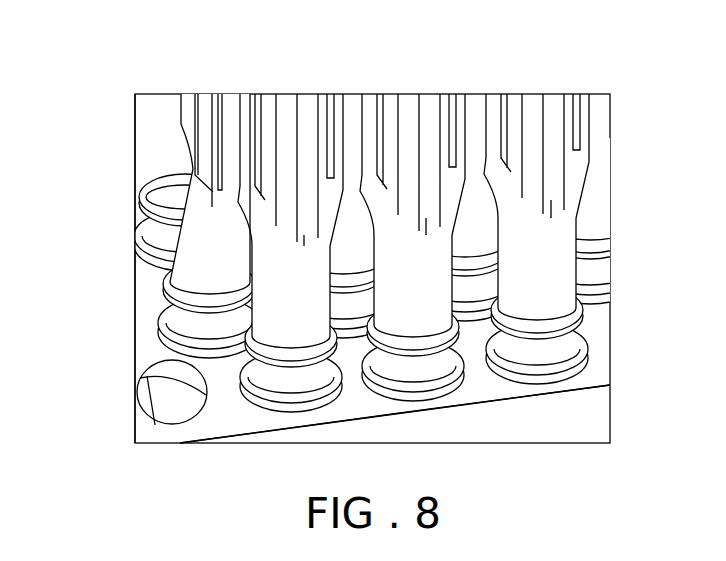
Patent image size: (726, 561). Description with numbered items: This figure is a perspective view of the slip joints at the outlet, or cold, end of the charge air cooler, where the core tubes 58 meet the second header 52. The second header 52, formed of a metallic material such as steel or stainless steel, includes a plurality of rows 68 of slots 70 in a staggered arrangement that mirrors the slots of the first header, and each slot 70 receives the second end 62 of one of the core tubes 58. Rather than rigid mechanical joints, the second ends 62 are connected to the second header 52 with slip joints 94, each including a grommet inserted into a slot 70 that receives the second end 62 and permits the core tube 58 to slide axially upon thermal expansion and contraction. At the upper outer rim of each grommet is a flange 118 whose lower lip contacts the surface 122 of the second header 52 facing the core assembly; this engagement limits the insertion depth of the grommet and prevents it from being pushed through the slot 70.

The second header 52 is at (600, 344).
The core tube 58 is at (195, 255).
The second end 62 is at (620, 309).
The row 68 is at (122, 310).
The slot 70 is at (146, 393).
The slip joint 94 is at (242, 412).
The flange 118 is at (570, 366).
The surface 122 is at (499, 397).